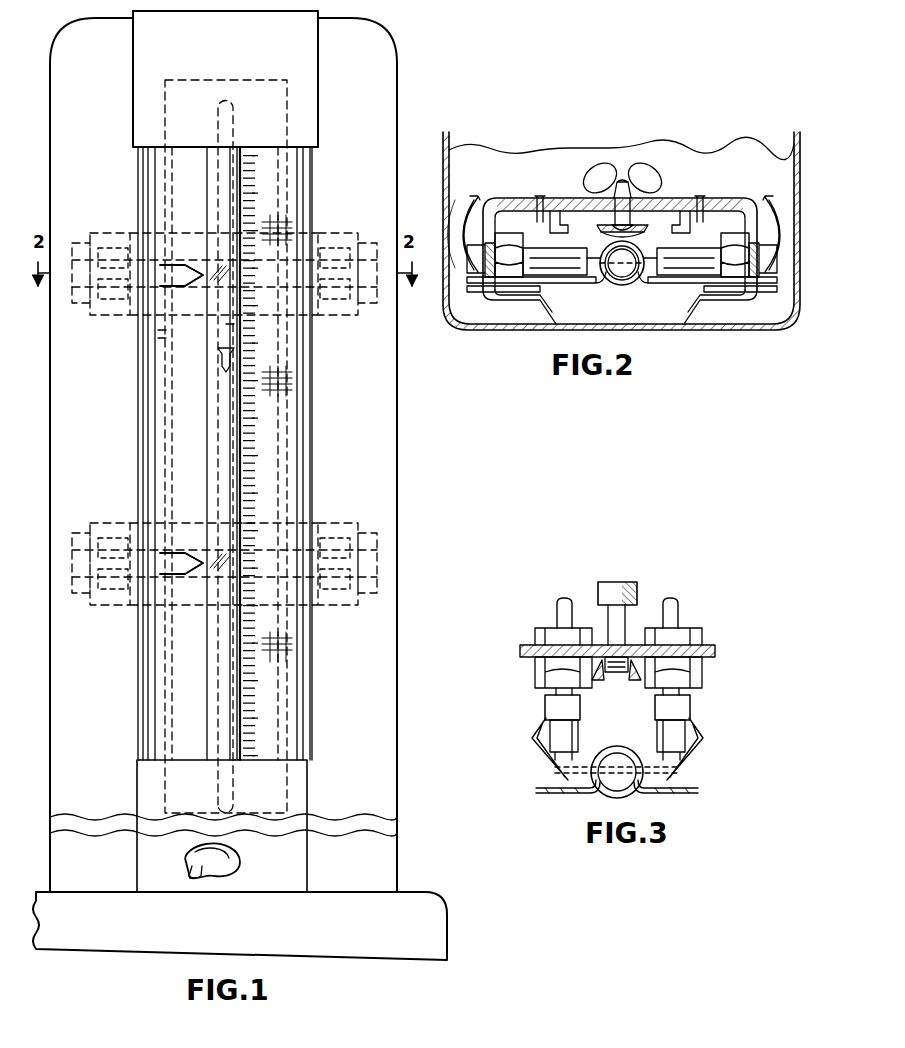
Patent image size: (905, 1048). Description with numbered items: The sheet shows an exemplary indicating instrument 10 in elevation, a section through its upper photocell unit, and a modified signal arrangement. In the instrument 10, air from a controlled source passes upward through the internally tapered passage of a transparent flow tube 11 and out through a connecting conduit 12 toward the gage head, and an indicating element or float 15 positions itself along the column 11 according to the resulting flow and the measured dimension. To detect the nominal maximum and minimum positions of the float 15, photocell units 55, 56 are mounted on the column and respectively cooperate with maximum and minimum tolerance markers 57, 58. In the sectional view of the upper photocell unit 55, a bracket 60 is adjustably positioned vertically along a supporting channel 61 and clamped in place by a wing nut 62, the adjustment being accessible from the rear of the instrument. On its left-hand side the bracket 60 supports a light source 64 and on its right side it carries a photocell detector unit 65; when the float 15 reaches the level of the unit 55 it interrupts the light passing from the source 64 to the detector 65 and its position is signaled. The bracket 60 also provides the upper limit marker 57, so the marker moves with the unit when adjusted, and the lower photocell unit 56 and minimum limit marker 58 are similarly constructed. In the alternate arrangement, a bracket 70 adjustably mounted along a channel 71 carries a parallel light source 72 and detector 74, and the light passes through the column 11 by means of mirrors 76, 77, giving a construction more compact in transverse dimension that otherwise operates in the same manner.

In FIG. 1, the instrument 10 is at (400, 452).
In FIG. 1, the transparent flow tube 11 is at (213, 684).
In FIG. 2, the transparent flow tube 11 is at (612, 286).
In FIG. 3, the transparent flow tube 11 is at (608, 792).
In FIG. 1, the connecting conduit 12 is at (186, 852).
In FIG. 1, the indicating element or float 15 is at (220, 362).
In FIG. 1, the photocell unit 55 is at (372, 322).
In FIG. 2, the photocell unit 55 is at (532, 166).
In FIG. 1, the photocell unit 56 is at (370, 530).
In FIG. 1, the maximum tolerance marker 57 is at (186, 262).
In FIG. 2, the maximum tolerance marker 57 is at (573, 296).
In FIG. 1, the minimum tolerance marker 58 is at (186, 550).
In FIG. 2, the bracket 60 is at (666, 204).
In FIG. 1, the supporting channel 61 is at (290, 126).
In FIG. 2, the supporting channel 61 is at (690, 210).
In FIG. 2, the wing nut 62 is at (598, 174).
In FIG. 1, the light source 64 is at (148, 331).
In FIG. 2, the light source 64 is at (540, 270).
In FIG. 1, the photocell detector unit 65 is at (288, 238).
In FIG. 2, the photocell detector unit 65 is at (688, 275).
In FIG. 3, the bracket 70 is at (637, 648).
In FIG. 3, the channel 71 is at (630, 672).
In FIG. 3, the light source 72 is at (545, 705).
In FIG. 3, the detector 74 is at (690, 705).
In FIG. 3, the mirror 76 is at (553, 769).
In FIG. 3, the mirror 77 is at (676, 773).